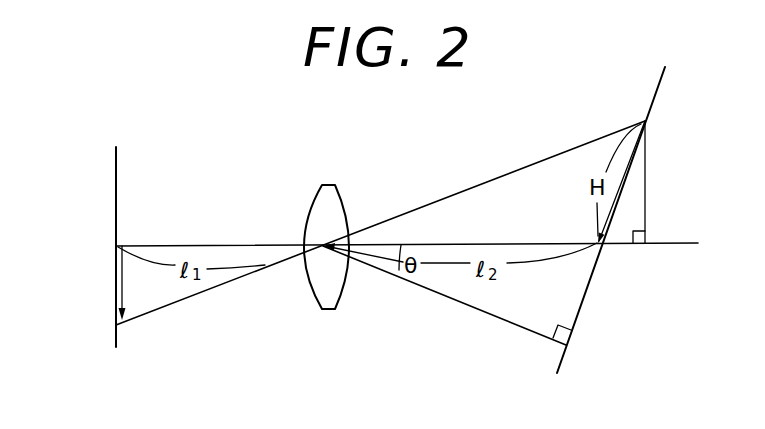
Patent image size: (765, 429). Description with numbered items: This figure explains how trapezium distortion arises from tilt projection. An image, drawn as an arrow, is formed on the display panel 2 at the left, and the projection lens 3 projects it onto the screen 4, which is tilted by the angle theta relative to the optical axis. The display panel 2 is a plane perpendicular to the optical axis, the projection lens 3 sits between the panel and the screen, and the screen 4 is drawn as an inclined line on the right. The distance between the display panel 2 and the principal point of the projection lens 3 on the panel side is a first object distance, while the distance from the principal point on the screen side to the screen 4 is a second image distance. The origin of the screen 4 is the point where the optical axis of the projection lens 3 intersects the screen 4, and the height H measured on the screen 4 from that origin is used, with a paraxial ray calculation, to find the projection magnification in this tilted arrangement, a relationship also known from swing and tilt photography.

The display panel 2 is at (113, 155).
The projection lens 3 is at (315, 200).
The screen 4 is at (657, 92).